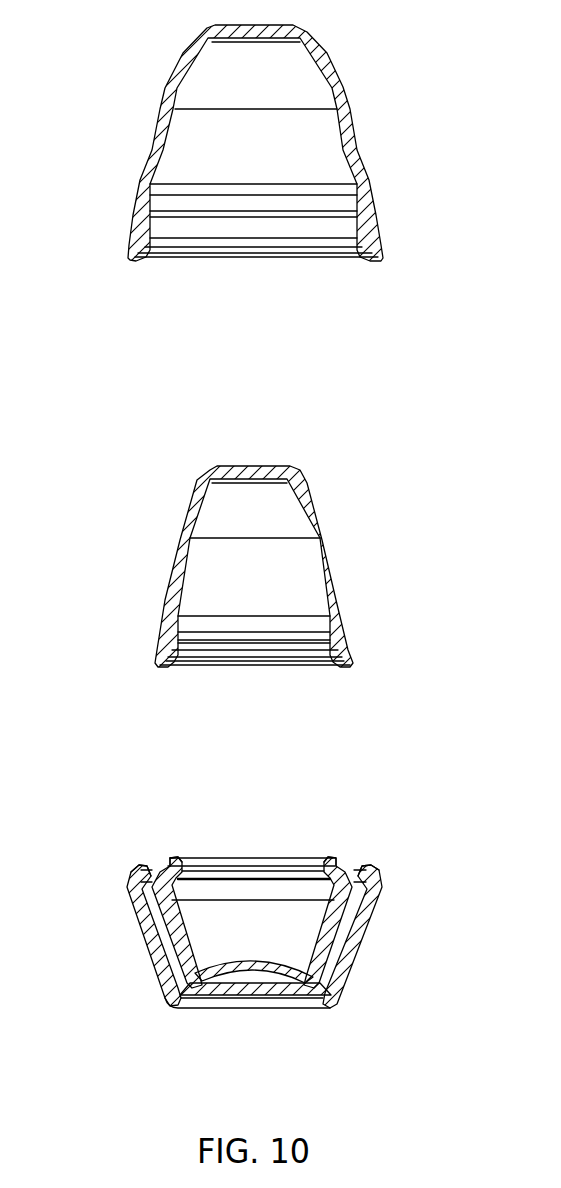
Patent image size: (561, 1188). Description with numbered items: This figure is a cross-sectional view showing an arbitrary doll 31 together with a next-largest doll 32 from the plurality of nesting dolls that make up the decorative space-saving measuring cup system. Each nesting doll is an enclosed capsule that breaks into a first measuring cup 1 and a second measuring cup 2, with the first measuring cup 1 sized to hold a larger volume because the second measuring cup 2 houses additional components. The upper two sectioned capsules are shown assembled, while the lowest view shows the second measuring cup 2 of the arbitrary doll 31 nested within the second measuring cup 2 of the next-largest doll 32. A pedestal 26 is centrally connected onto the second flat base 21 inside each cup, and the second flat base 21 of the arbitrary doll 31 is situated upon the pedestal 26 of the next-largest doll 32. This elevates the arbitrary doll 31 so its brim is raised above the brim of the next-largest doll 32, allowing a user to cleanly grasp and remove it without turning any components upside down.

The first measuring cup 1 is at (348, 133).
The second measuring cup 2 is at (137, 886).
The second flat base 21 is at (308, 980).
The pedestal 26 is at (257, 965).
The arbitrary doll 31 is at (157, 580).
The next-largest doll 32 is at (127, 149).